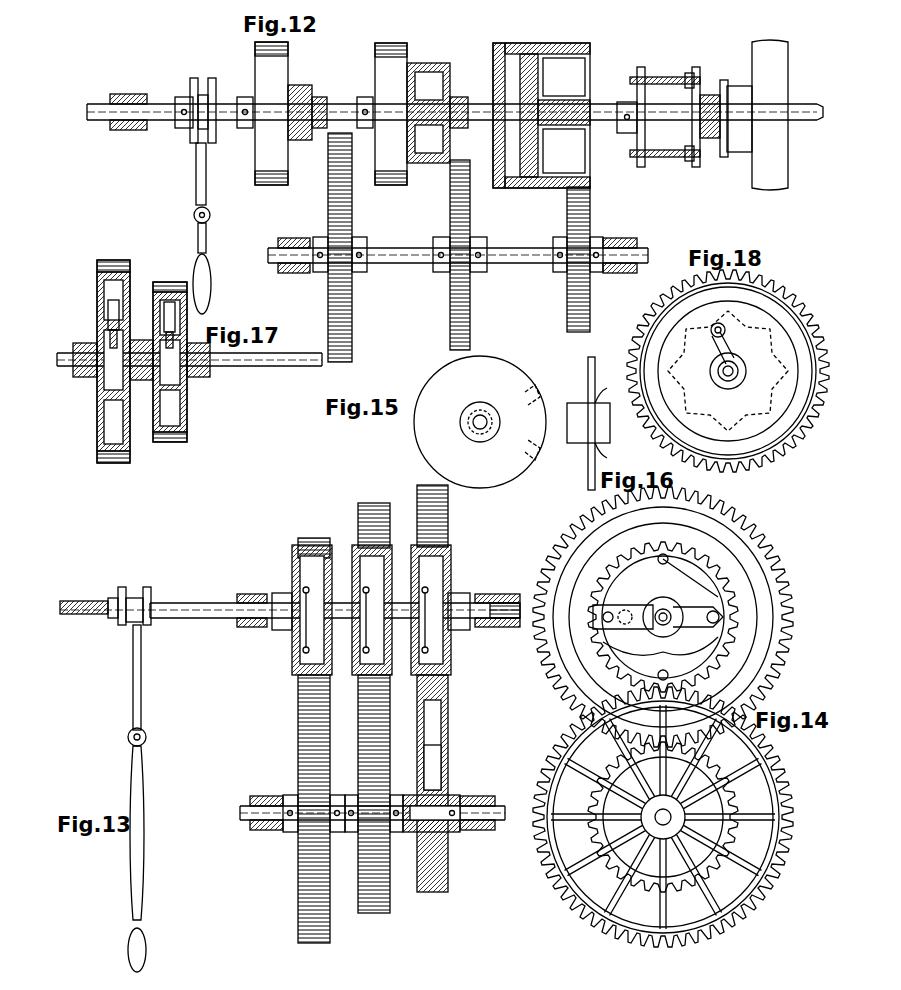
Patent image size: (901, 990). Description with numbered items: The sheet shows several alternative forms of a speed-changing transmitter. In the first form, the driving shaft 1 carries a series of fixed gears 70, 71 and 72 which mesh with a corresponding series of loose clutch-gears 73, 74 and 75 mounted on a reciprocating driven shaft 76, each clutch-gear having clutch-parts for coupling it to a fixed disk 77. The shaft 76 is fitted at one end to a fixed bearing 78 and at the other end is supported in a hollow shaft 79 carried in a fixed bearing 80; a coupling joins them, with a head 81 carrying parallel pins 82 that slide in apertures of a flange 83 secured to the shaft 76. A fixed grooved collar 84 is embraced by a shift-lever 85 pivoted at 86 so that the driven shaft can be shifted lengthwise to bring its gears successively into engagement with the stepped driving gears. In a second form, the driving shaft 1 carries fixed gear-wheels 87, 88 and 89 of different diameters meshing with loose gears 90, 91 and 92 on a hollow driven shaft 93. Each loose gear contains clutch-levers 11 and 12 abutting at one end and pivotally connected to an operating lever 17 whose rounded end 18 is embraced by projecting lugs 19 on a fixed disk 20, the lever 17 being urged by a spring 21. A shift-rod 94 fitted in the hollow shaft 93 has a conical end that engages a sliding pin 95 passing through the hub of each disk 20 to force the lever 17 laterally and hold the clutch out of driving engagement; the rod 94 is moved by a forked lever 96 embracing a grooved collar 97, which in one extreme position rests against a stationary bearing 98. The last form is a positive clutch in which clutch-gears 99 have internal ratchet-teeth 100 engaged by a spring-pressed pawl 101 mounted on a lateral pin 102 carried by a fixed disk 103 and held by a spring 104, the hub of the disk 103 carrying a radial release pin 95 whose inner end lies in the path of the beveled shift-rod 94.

In FIG. 12, the driving shaft 1 is at (642, 250).
In FIG. 16, the clutch-lever 11 is at (655, 574).
In FIG. 16, the clutch-lever 12 is at (635, 657).
In FIG. 16, the operating lever 17 is at (685, 644).
In FIG. 15, the rounded opposite end 18 is at (480, 422).
In FIG. 16, the rounded opposite end 18 is at (720, 607).
In FIG. 15, the projecting lugs 19 is at (536, 397).
In FIG. 16, the projecting lugs 19 is at (598, 400).
In FIG. 13, the fixed disk 20 is at (292, 564).
In FIG. 16, the spring 21 is at (746, 535).
In FIG. 12, the fixed gear 70 is at (594, 320).
In FIG. 12, the fixed gear 71 is at (475, 348).
In FIG. 12, the fixed gear 72 is at (366, 255).
In FIG. 12, the loose clutch-gear 73 is at (543, 43).
In FIG. 12, the loose clutch-gear 74 is at (438, 99).
In FIG. 12, the loose clutch-gear 75 is at (330, 89).
In FIG. 12, the reciprocating driven shaft 76 is at (165, 98).
In FIG. 12, the fixed disk 77 is at (257, 72).
In FIG. 12, the fixed bearing 78 is at (130, 128).
In FIG. 12, the hollow shaft 79 is at (816, 108).
In FIG. 12, the fixed bearing 80 is at (784, 104).
In FIG. 12, the head 81 is at (712, 90).
In FIG. 12, the parallel pins 82 is at (662, 66).
In FIG. 12, the flange 83 is at (629, 134).
In FIG. 12, the fixed grooved collar 84 is at (192, 75).
In FIG. 12, the shift-lever 85 is at (181, 144).
In FIG. 12, the pivot 86 is at (210, 218).
In FIG. 13, the fixed gear-wheel 87 is at (453, 892).
In FIG. 13, the fixed gear-wheel 88 is at (390, 912).
In FIG. 13, the fixed gear-wheel 89 is at (330, 943).
In FIG. 13, the loose gear 90 is at (417, 484).
In FIG. 13, the loose gear 91 is at (360, 504).
In FIG. 13, the loose gear 92 is at (300, 538).
In FIG. 13, the hollow driven shaft 93 is at (518, 602).
In FIG. 17, the shift-rod 94 is at (270, 360).
In FIG. 13, the shift-rod 94 is at (180, 607).
In FIG. 16, the sliding pin 95 is at (555, 665).
In FIG. 18, the sliding pin 95 is at (740, 357).
In FIG. 13, the sliding pin 95 is at (287, 644).
In FIG. 13, the forked lever 96 is at (141, 708).
In FIG. 13, the grooved collar 97 is at (121, 593).
In FIG. 13, the stationary bearing 98 is at (74, 617).
In FIG. 17, the clutch-gear 99 is at (104, 264).
In FIG. 18, the clutch-gear 99 is at (760, 460).
In FIG. 18, the internal ratchet-teeth 100 is at (782, 298).
In FIG. 18, the spring-pressed pawl 101 is at (743, 338).
In FIG. 18, the lateral pin 102 is at (710, 348).
In FIG. 17, the fixed disk 103 is at (128, 300).
In FIG. 18, the spring 104 is at (721, 381).